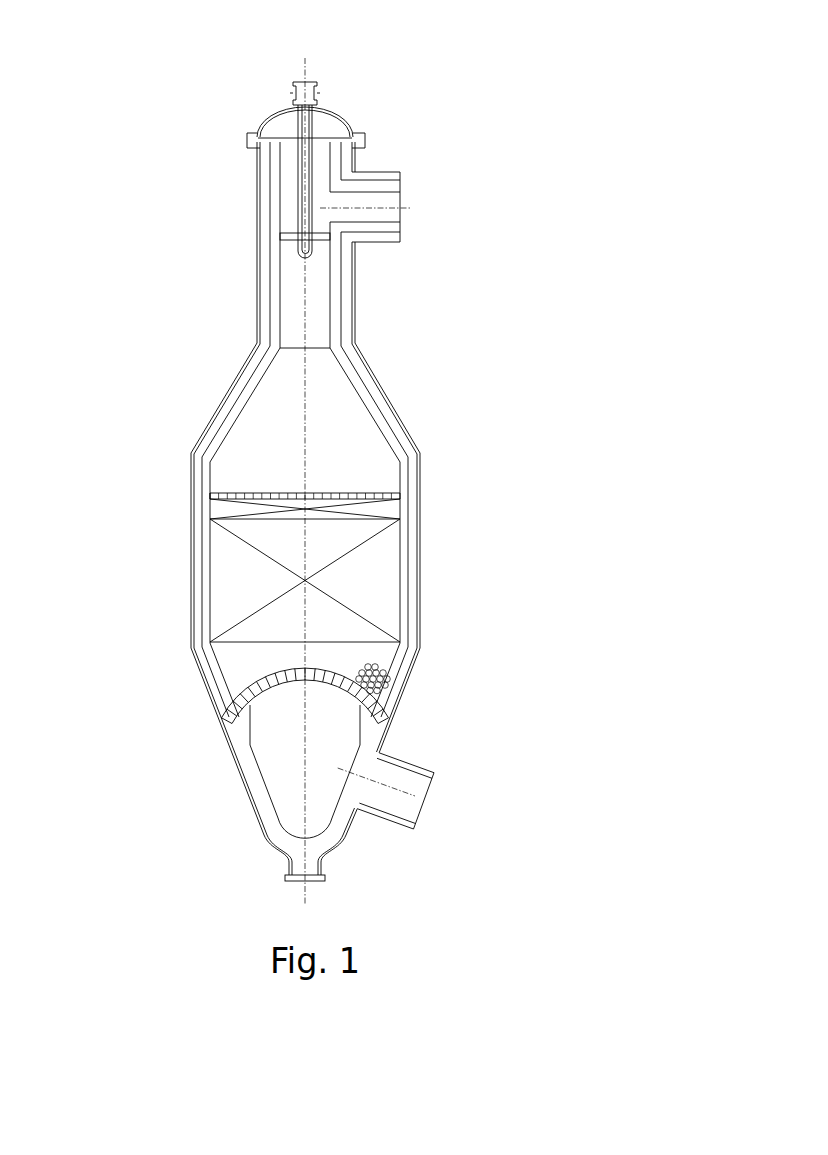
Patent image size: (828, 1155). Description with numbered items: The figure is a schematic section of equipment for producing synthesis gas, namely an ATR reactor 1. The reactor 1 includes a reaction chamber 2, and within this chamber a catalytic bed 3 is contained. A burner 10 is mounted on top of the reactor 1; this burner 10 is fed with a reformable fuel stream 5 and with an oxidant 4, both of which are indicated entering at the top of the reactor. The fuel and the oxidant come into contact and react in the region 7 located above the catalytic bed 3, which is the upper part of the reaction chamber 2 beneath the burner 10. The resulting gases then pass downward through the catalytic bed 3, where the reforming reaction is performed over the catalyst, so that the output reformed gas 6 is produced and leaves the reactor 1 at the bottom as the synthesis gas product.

The ATR reactor 1 is at (495, 240).
The reaction chamber 2 is at (395, 677).
The catalytic bed 3 is at (365, 602).
The oxidant 4 is at (305, 52).
The reformable fuel stream 5 is at (278, 97).
The output reformed gas 6 is at (415, 796).
The region above the catalytic bed 7 is at (273, 423).
The burner 10 is at (316, 115).